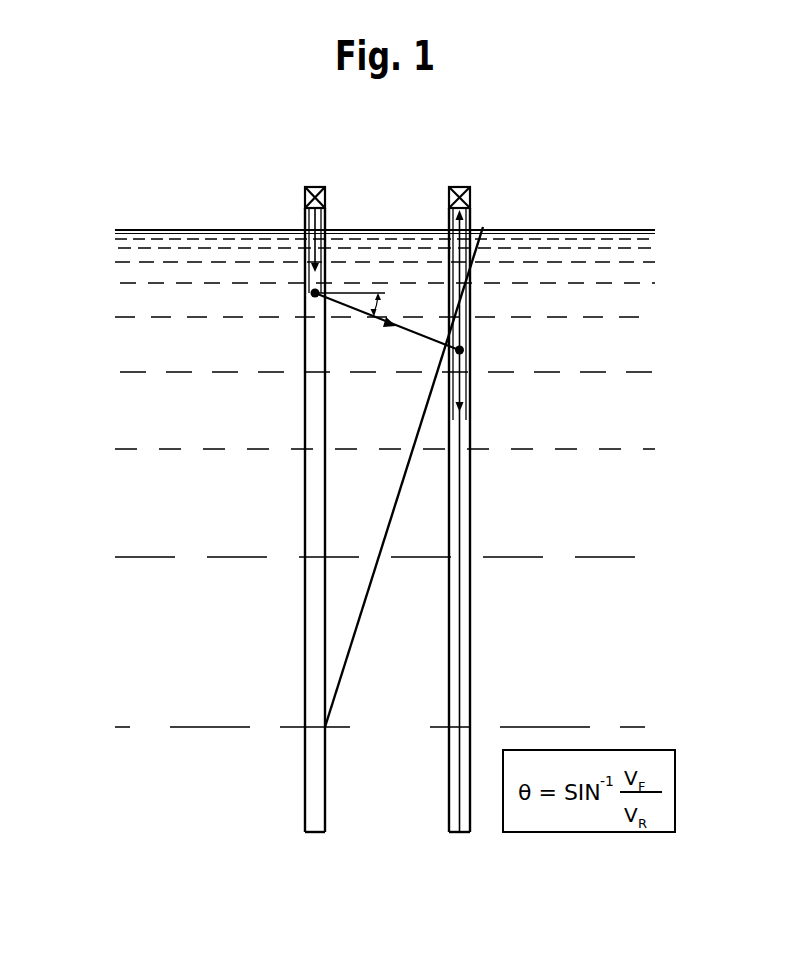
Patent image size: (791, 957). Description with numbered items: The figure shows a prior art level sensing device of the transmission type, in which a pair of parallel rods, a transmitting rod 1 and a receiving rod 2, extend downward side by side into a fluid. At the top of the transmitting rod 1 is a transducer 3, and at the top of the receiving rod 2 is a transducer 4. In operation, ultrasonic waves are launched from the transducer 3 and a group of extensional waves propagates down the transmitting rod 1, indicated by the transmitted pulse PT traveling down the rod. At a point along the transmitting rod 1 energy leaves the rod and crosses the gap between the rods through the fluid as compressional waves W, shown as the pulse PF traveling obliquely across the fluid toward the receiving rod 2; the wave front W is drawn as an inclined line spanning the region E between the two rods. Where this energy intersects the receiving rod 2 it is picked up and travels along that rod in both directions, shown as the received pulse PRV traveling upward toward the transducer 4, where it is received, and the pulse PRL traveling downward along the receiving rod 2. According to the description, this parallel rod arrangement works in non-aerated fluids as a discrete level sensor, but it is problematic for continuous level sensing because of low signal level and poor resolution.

The transmitting rod 1 is at (305, 527).
The receiving rod 2 is at (471, 540).
The transducer 3 is at (303, 197).
The transducer 4 is at (471, 198).
The transmitted pulse PT is at (305, 262).
The pulse propagating through formation PF is at (445, 346).
The received pulse traveling upward PRV is at (471, 266).
The received pulse traveling downward PRL is at (471, 462).
The compressional waves W is at (370, 592).
The earth formation E is at (382, 420).